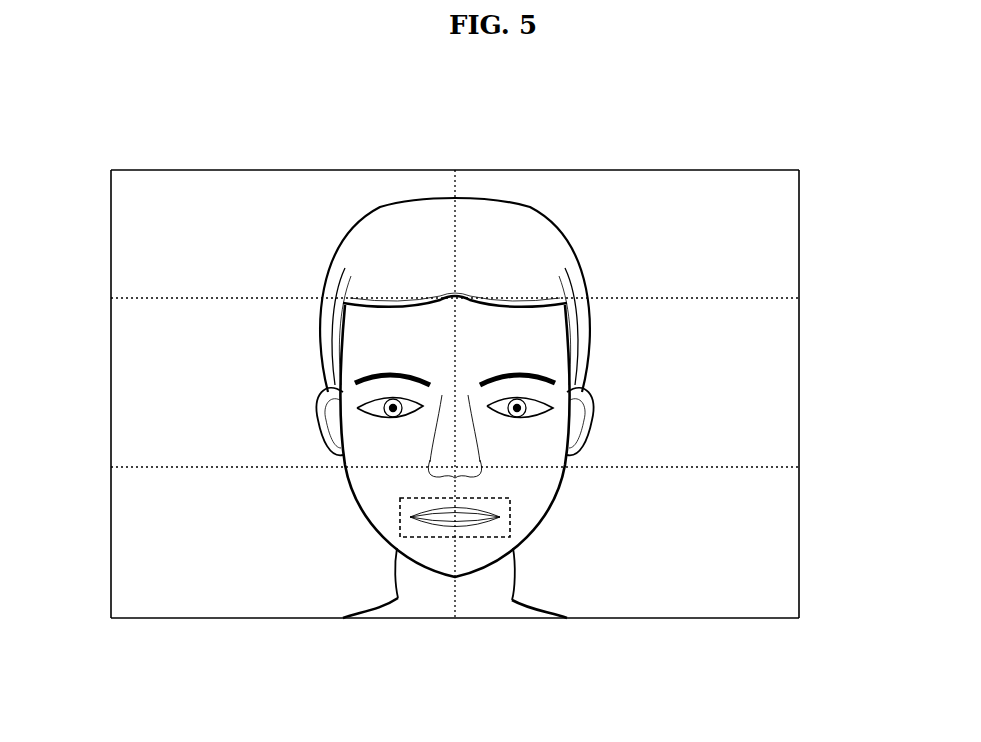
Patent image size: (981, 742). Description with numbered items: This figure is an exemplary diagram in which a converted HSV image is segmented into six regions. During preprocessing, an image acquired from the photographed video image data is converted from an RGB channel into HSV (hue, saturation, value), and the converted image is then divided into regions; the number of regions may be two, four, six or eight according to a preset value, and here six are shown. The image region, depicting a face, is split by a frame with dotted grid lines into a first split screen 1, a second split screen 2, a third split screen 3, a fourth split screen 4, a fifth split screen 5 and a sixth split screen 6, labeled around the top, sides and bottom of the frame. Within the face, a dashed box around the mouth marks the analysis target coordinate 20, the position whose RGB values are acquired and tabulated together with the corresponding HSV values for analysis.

The first split screen 1 is at (348, 170).
The second split screen 2 is at (670, 170).
The third split screen 3 is at (110, 391).
The fourth split screen 4 is at (800, 386).
The fifth split screen 5 is at (312, 620).
The sixth split screen 6 is at (633, 620).
The analysis target coordinate 20 is at (511, 518).